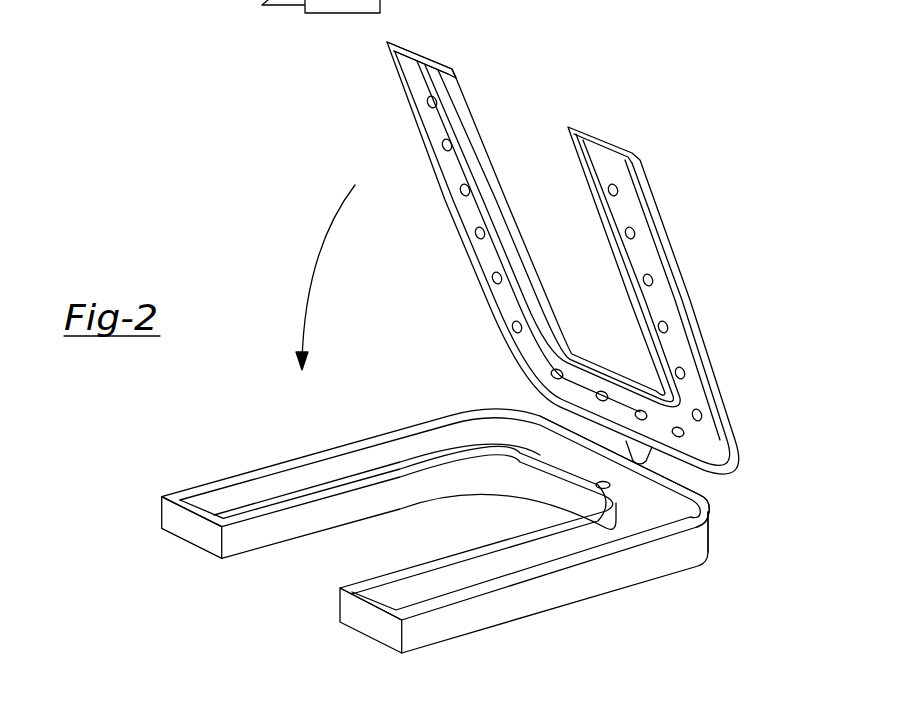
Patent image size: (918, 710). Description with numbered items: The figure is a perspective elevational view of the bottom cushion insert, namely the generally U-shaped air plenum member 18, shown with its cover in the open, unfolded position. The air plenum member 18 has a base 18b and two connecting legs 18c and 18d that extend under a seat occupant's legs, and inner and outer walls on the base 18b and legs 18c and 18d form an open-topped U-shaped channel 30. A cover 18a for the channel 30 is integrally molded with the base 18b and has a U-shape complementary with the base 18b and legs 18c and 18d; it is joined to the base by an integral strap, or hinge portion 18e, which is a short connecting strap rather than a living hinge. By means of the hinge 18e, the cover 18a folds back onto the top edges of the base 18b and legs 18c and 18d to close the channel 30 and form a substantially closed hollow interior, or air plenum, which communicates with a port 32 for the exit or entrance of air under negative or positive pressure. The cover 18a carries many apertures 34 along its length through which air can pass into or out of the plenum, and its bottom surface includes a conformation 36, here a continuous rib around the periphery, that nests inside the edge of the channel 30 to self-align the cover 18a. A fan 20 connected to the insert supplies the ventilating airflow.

The air plenum member 18 is at (216, 468).
The cover 18a is at (677, 272).
The base 18b is at (707, 505).
The leg 18c is at (178, 529).
The leg 18d is at (363, 622).
The hinge portion 18e is at (643, 457).
The fan 20 is at (289, 9).
The channel 30 is at (296, 482).
The port 32 is at (612, 490).
The apertures 34 is at (460, 190).
The conformation 36 is at (425, 73).